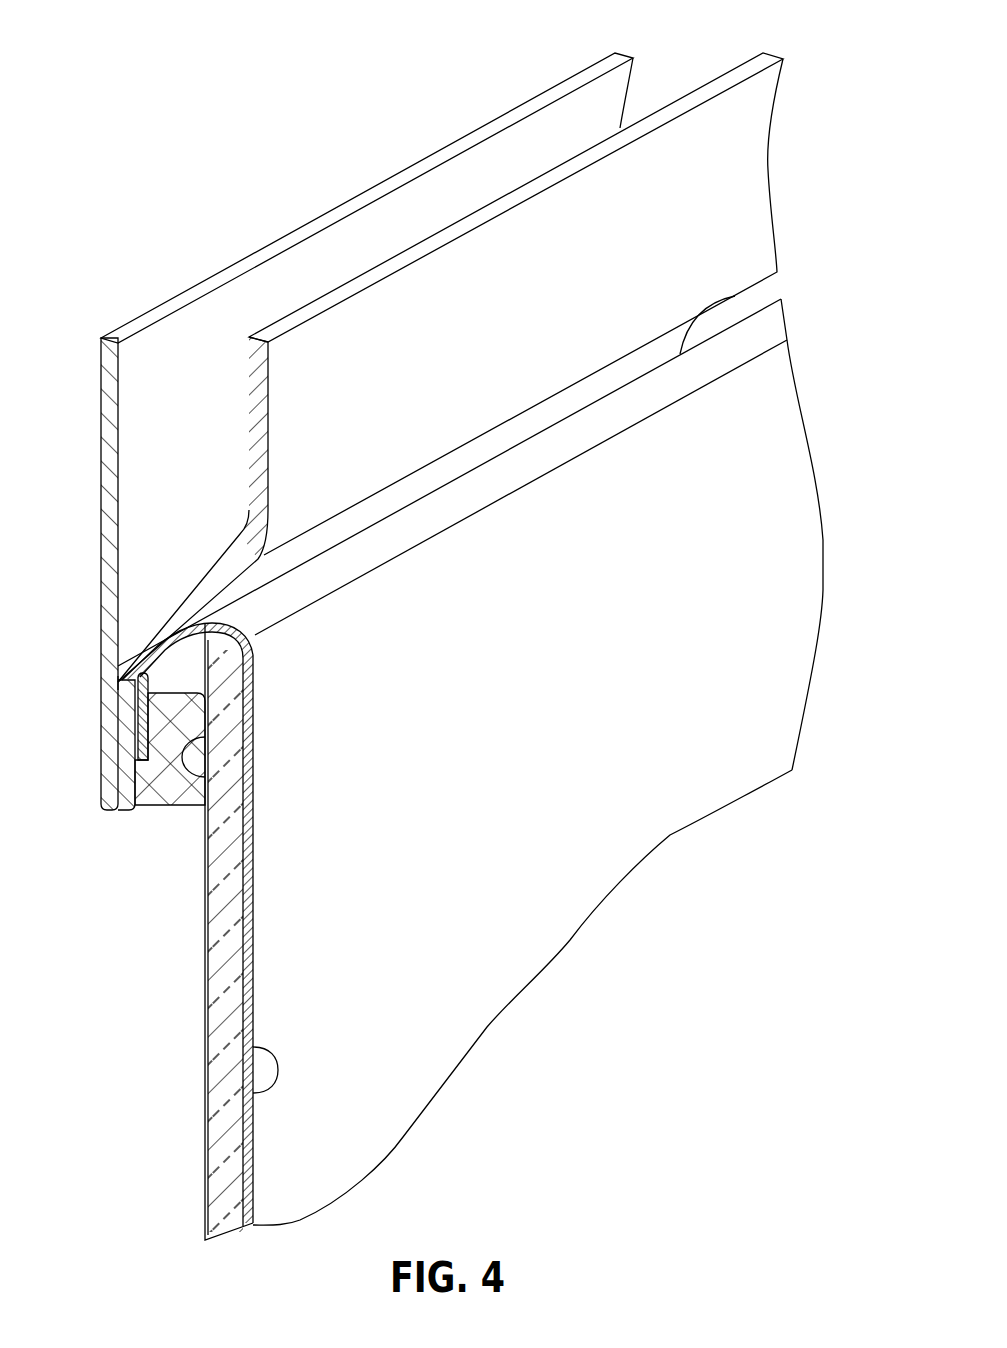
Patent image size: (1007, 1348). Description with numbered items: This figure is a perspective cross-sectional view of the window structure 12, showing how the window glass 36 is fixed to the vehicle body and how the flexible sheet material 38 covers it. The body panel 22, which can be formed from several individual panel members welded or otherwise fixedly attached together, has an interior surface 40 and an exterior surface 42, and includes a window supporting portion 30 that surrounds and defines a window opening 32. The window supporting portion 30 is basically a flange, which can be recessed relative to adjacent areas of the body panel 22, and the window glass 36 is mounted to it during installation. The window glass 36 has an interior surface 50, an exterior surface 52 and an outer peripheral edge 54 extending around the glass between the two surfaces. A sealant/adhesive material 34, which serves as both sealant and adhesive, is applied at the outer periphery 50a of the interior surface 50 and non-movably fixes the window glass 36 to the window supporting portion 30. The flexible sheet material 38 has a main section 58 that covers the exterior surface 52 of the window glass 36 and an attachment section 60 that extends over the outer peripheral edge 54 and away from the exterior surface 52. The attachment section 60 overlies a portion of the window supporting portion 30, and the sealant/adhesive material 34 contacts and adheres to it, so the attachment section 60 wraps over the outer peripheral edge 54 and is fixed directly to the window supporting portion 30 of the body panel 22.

The window structure 12 is at (728, 25).
The body panel 22 is at (336, 205).
The interior surface 40 is at (101, 457).
The exterior surface 42 is at (718, 212).
The attachment section 60 is at (118, 683).
The window opening 32 is at (118, 806).
The window supporting portion 30 is at (132, 805).
The sealant/adhesive material 34 is at (171, 783).
The window glass 36 is at (226, 992).
The interior surface 50 is at (205, 1160).
The outer periphery 50a is at (186, 774).
The exterior surface 52 is at (243, 1097).
The outer peripheral edge 54 is at (226, 632).
The main section 58 is at (470, 953).
The flexible sheet material 38 is at (375, 1118).